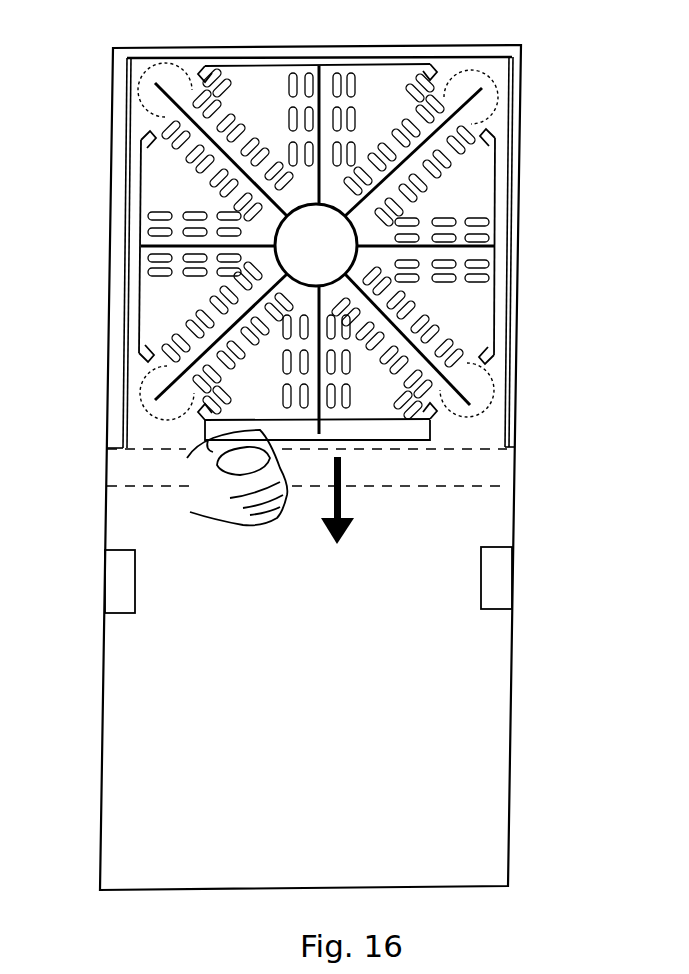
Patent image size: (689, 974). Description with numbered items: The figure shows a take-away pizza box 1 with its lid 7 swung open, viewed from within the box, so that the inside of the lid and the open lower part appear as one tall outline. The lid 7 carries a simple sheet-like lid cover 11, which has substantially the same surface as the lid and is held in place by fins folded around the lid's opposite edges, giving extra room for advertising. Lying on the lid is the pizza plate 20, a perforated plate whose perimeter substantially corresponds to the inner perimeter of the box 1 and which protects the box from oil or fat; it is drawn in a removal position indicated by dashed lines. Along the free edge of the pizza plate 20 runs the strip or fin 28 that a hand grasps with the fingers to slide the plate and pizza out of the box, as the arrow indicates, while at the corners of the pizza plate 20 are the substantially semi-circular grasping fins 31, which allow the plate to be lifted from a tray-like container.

The pizza box 1 is at (550, 193).
The lid 7 is at (127, 747).
The lid cover 11 is at (118, 577).
The pizza plate 20 is at (172, 312).
The strip or fin 28 is at (388, 430).
The grasping fin 31 is at (183, 78).